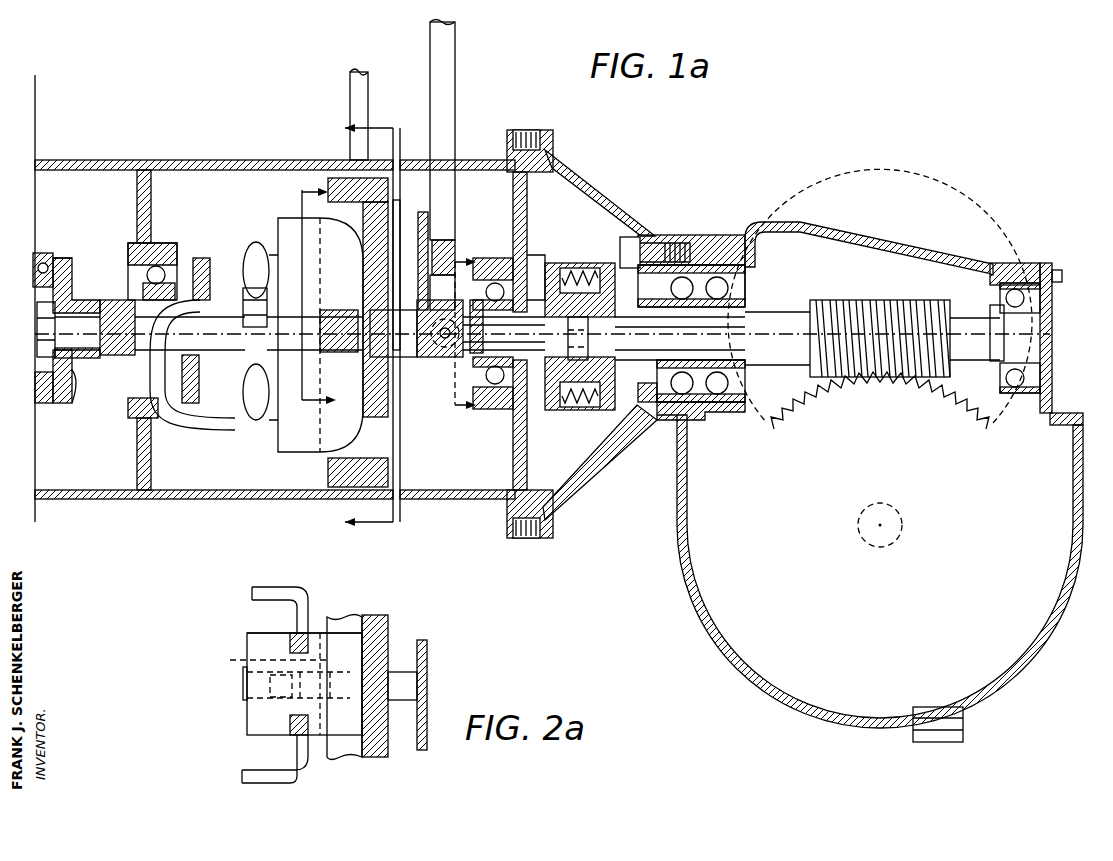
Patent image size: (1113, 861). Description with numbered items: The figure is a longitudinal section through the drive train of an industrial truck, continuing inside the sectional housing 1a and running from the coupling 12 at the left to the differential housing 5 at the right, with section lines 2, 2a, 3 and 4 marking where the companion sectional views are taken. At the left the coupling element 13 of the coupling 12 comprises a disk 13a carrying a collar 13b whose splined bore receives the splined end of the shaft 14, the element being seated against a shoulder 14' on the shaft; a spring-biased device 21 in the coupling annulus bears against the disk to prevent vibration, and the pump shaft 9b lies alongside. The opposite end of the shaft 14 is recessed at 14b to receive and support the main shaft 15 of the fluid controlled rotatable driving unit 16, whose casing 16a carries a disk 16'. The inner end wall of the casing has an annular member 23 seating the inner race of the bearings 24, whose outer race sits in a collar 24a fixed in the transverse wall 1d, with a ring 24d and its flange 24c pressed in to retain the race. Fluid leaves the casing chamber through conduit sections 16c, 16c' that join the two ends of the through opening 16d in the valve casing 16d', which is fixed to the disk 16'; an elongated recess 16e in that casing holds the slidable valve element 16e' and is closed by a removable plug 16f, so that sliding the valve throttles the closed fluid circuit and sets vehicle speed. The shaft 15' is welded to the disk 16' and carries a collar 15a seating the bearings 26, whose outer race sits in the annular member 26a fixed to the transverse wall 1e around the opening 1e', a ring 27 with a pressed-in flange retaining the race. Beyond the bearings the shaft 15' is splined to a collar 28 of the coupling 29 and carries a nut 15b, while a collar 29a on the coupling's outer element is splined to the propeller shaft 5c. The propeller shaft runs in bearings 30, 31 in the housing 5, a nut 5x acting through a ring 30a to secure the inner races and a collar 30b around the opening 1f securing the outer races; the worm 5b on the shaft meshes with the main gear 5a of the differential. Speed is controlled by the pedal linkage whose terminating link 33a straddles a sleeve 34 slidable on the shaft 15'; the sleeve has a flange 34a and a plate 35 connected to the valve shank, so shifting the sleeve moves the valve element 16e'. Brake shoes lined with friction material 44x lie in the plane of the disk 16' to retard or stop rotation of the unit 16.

In FIG. 1A, the sectional housing 1a is at (37, 335).
In FIG. 1A, the transverse wall 1d is at (150, 183).
In FIG. 1A, the transverse wall 1e is at (532, 221).
In FIG. 1A, the opening 1e' is at (591, 195).
In FIG. 1A, the opening 1f is at (612, 458).
In FIG. 1A, the section line 2- 2 is at (328, 298).
In FIG. 1A, the section line 2a- 2a is at (219, 428).
In FIG. 1A, the section line 3- 3 is at (361, 301).
In FIG. 1A, the section line 4- 4 is at (484, 330).
In FIG. 1A, the housing 5 is at (672, 545).
In FIG. 1A, the main gear 5a is at (740, 470).
In FIG. 1A, the worm 5b is at (850, 300).
In FIG. 1A, the propeller shaft 5c is at (775, 300).
In FIG. 1A, the nut 5x is at (575, 360).
In FIG. 1A, the pump shaft 9b is at (40, 256).
In FIG. 1A, the coupling 12 is at (52, 399).
In FIG. 1A, the coupling element 13 is at (78, 285).
In FIG. 1A, the disk 13a is at (80, 262).
In FIG. 1A, the collar 13b is at (80, 372).
In FIG. 1A, the shaft 14 is at (89, 310).
In FIG. 1A, the shoulder 14' is at (117, 327).
In FIG. 1A, the axial recess 14b is at (87, 365).
In FIG. 1A, the main shaft 15 is at (246, 319).
In FIG. 1A, the shaft 15' is at (338, 347).
In FIG. 1A, the collar 15a is at (500, 322).
In FIG. 1A, the nut 15b is at (504, 345).
In FIG. 1A, the fluid controlled rotatable driving unit 16 is at (287, 335).
In FIG. 1A, the disk 16' is at (355, 332).
In FIG. 2A, the disk 16' is at (400, 678).
In FIG. 1A, the casing 16a is at (290, 235).
In FIG. 2A, the conduit section 16c is at (304, 612).
In FIG. 2A, the conduit section 16c' is at (249, 749).
In FIG. 2A, the through opening 16d is at (280, 684).
In FIG. 2A, the valve casing 16d' is at (280, 622).
In FIG. 2A, the elongated recess 16e is at (341, 705).
In FIG. 2A, the valve element 16e' is at (409, 717).
In FIG. 2A, the removable plug 16f is at (243, 690).
In FIG. 1A, the biased device 21 is at (78, 400).
In FIG. 1A, the annular member 23 is at (205, 285).
In FIG. 1A, the anti-friction bearings 24 is at (175, 255).
In FIG. 1A, the collar 24a is at (158, 262).
In FIG. 1A, the flange 24c is at (137, 410).
In FIG. 1A, the ring 24d is at (132, 243).
In FIG. 1A, the anti-friction bearings 26 is at (548, 275).
In FIG. 1A, the annular member 26a is at (520, 255).
In FIG. 1A, the ring 27 is at (560, 410).
In FIG. 1A, the collar 28 is at (600, 405).
In FIG. 1A, the coupling 29 is at (665, 399).
In FIG. 1A, the collar 29a is at (705, 300).
In FIG. 1A, the anti-friction bearings 30 is at (750, 285).
In FIG. 1A, the ring 30a is at (678, 341).
In FIG. 1A, the collar 30b is at (660, 248).
In FIG. 1A, the anti-friction bearings 31 is at (1000, 380).
In FIG. 1A, the terminating link 33a is at (455, 83).
In FIG. 1A, the sleeve 34 is at (416, 328).
In FIG. 1A, the flange 34a is at (490, 405).
In FIG. 1A, the plate 35 is at (415, 240).
In FIG. 1A, the friction material 44x is at (403, 160).